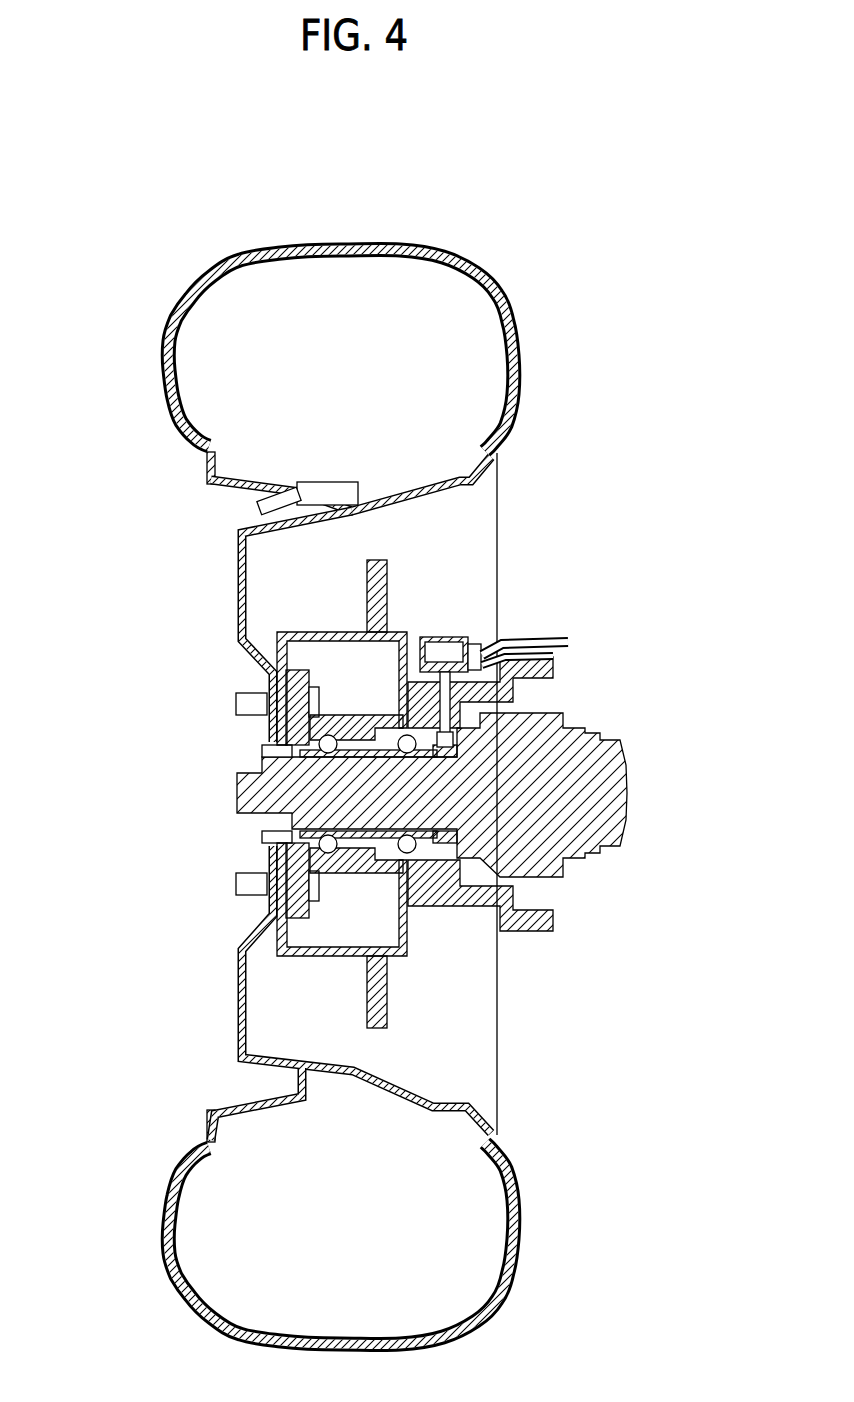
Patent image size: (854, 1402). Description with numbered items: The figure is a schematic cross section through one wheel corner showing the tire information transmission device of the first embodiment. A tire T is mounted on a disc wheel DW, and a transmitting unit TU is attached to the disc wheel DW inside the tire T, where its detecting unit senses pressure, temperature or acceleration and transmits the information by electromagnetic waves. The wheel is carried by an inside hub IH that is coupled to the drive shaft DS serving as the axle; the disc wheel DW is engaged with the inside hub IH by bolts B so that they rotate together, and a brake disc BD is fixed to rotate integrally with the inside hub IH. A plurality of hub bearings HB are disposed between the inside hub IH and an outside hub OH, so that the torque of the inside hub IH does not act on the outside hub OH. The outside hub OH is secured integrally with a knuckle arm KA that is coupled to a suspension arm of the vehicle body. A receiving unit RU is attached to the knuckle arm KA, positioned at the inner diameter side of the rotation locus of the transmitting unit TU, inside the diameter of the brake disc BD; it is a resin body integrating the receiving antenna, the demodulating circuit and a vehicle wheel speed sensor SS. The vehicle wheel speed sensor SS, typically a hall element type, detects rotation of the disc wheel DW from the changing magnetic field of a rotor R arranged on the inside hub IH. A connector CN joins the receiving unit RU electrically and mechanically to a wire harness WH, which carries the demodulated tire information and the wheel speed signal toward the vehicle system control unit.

The tire T is at (508, 322).
The transmitting unit TU is at (333, 480).
The disc wheel DW is at (207, 482).
The inside hub IH is at (297, 627).
The outside hub OH is at (343, 730).
The hub bearings HB is at (330, 852).
The bolts B is at (240, 703).
The receiving unit RU is at (448, 637).
The vehicle wheel speed sensor SS is at (453, 743).
The connector CN is at (478, 643).
The wire harness WH is at (557, 635).
The knuckle arm KA is at (555, 658).
The drive shaft DS is at (607, 813).
The rotor R is at (436, 846).
The brake disc BD is at (368, 1007).